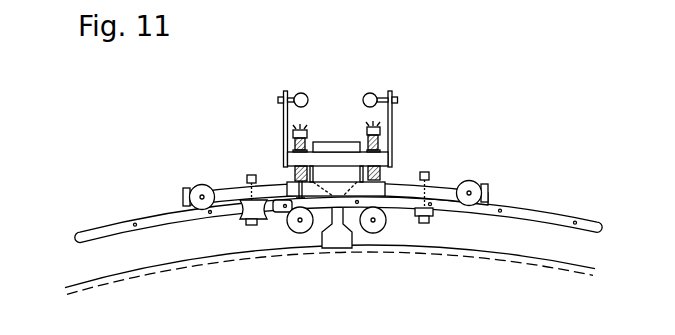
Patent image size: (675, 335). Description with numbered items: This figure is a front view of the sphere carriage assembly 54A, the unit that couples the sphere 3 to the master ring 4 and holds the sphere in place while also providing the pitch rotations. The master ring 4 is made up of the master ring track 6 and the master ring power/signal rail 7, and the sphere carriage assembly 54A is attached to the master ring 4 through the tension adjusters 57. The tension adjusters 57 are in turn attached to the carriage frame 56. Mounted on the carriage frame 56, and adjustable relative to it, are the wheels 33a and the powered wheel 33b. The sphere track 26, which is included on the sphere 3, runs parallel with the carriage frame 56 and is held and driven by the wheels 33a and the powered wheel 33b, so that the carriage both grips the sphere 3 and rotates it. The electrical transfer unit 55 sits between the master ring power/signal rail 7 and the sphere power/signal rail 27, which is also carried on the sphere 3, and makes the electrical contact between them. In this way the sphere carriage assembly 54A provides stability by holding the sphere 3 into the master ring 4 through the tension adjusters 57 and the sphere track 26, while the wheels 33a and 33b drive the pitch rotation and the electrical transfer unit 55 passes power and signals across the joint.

The sphere 3 is at (313, 326).
The master ring 4 is at (391, 157).
The master ring track 6 is at (299, 93).
The master ring power/signal rail 7 is at (334, 142).
The sphere track 26 is at (90, 232).
The sphere power/signal rail 27 is at (390, 252).
The wheels 33a is at (493, 283).
The powered wheel 33b is at (186, 196).
The sphere carriage assembly 54A is at (180, 160).
The electrical transfer unit 55 is at (337, 238).
The carriage frame 56 is at (405, 181).
The tension adjusters 57 is at (294, 129).